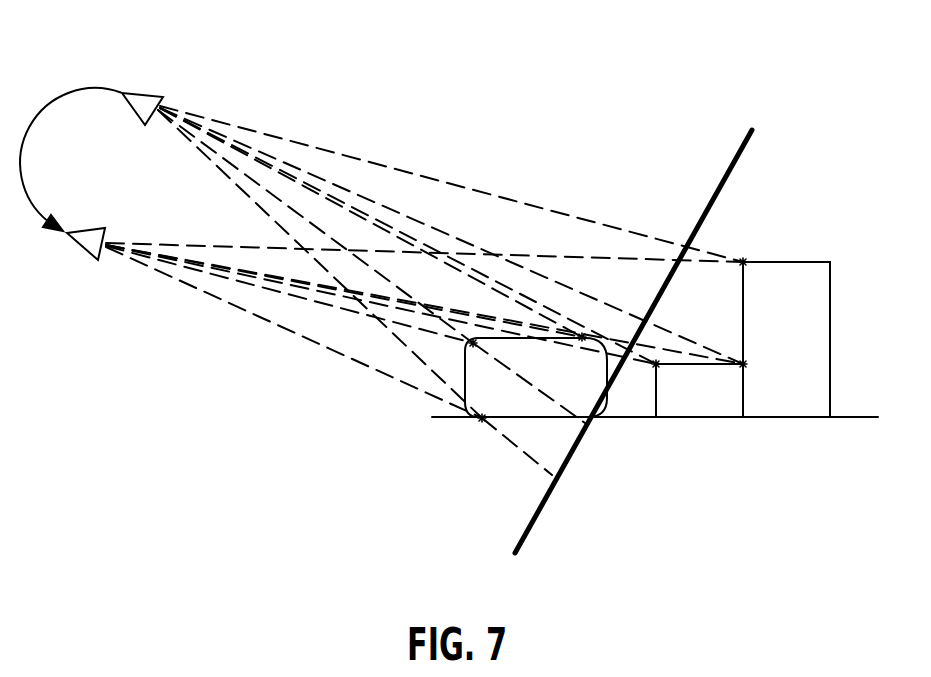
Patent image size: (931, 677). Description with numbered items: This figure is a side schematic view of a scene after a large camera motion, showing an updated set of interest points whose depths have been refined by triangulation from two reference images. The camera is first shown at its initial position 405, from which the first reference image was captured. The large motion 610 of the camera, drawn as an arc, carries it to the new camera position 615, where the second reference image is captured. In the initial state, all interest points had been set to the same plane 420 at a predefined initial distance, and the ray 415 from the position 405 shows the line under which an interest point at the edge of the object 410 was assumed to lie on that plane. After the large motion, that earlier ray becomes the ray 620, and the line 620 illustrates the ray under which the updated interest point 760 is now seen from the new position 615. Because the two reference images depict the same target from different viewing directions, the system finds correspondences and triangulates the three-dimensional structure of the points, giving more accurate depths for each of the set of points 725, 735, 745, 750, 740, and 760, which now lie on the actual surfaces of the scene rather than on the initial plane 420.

The camera position 405 is at (150, 92).
The object 410 is at (805, 262).
The ray 415 is at (462, 187).
The plane 420 is at (752, 130).
The large motion 610 is at (62, 97).
The new camera position 615 is at (80, 230).
The ray 620 is at (227, 247).
The interest point 725 is at (482, 418).
The interest point 735 is at (473, 343).
The interest point 740 is at (744, 362).
The interest point 745 is at (582, 337).
The interest point 750 is at (657, 363).
The updated interest point 760 is at (744, 260).